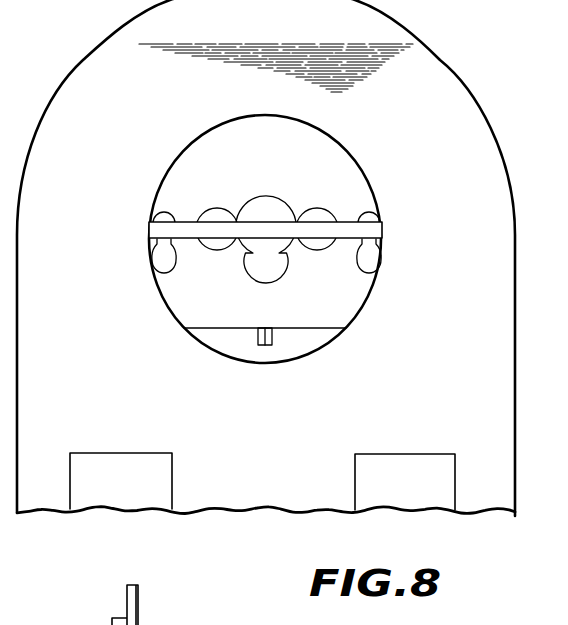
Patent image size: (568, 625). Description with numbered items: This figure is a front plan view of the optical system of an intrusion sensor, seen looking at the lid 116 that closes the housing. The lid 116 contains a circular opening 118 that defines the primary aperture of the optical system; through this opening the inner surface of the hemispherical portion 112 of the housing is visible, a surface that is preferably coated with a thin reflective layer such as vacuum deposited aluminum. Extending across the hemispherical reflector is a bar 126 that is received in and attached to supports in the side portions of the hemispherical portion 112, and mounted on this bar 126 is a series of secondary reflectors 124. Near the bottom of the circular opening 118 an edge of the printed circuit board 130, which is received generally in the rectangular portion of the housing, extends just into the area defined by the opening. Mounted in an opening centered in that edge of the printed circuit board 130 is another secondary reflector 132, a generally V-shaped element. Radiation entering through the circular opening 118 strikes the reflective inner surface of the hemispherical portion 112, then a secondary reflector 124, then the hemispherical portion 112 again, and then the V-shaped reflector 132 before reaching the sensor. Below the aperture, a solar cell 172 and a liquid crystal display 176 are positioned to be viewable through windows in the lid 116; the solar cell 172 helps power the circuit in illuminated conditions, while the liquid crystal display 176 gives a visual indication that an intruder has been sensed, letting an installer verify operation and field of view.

The hemispherical portion 112 is at (297, 215).
The lid 116 is at (444, 62).
The circular opening 118 is at (331, 155).
The secondary reflectors 124 is at (313, 213).
The bar 126 is at (374, 233).
The printed circuit board 130 is at (243, 347).
The secondary reflector 132 is at (278, 340).
The solar cell 172 is at (108, 467).
The liquid crystal display 176 is at (402, 458).